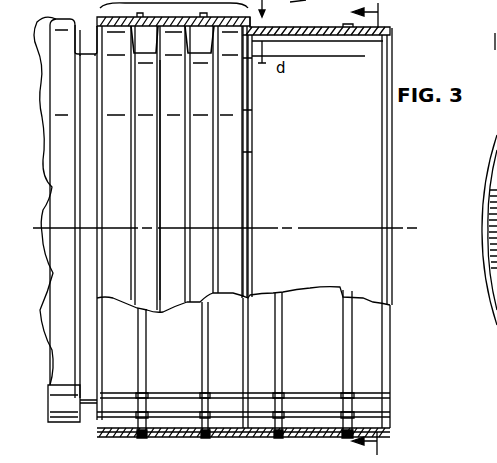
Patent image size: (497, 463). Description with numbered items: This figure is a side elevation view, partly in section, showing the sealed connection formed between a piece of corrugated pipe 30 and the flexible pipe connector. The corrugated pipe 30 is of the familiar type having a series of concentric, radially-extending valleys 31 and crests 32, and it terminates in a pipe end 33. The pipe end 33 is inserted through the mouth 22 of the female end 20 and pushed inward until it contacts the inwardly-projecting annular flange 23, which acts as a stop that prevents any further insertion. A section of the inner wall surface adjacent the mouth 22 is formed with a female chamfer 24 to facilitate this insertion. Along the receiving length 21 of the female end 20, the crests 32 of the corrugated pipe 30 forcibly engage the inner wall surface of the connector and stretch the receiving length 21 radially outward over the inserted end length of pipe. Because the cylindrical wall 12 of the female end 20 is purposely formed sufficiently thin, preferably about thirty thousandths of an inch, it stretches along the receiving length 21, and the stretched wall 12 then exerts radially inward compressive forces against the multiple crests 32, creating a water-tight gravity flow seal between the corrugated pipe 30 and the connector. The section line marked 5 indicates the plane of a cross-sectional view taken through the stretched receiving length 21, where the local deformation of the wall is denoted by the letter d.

The section line 5- 5 is at (375, 229).
The cylindrical wall 12 is at (295, 8).
The female end 20 is at (112, 367).
The receiving length 21 is at (97, 421).
The mouth 22 is at (97, 20).
The annular flange 23 is at (285, 26).
The female chamfer 24 is at (392, 41).
The corrugated pipe 30 is at (117, 197).
The valleys 31 is at (88, 46).
The crests 32 is at (36, 24).
The pipe end 33 is at (185, 142).